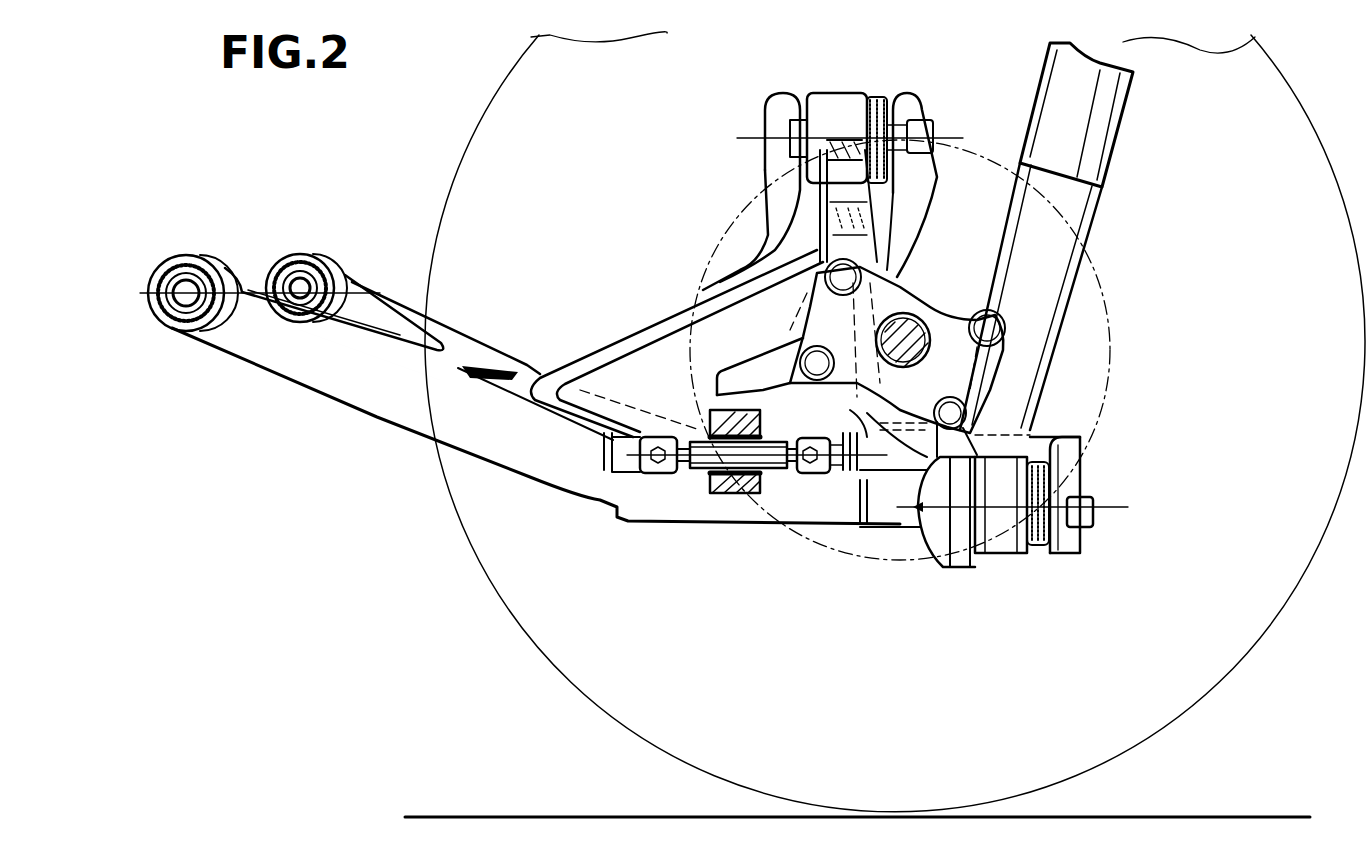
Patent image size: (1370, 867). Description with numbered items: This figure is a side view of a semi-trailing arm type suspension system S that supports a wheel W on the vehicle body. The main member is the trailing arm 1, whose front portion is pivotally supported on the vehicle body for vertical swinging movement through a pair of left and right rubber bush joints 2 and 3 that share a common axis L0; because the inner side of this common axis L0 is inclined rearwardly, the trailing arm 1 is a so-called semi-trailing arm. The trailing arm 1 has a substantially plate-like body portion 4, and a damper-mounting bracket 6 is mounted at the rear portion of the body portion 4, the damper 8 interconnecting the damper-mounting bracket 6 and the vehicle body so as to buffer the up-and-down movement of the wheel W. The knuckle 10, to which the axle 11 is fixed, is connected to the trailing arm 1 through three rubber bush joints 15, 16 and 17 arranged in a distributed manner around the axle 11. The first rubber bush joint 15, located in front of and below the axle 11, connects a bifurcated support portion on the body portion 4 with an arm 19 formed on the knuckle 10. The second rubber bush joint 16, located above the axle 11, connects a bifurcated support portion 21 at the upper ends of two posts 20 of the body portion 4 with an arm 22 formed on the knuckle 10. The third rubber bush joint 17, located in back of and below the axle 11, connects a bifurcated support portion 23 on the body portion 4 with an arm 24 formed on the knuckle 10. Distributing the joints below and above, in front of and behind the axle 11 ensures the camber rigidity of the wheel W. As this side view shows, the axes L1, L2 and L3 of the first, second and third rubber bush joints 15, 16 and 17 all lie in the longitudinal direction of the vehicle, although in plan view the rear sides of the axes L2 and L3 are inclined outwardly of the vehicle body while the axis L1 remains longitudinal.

The trailing arm 1 is at (374, 424).
The rubber bush joint 2 is at (299, 266).
The rubber bush joint 3 is at (174, 270).
The body portion 4 is at (519, 455).
The damper-mounting bracket 6 is at (920, 520).
The damper 8 is at (1112, 120).
The knuckle 10 is at (934, 292).
The axle 11 is at (920, 352).
The first rubber bush joint 15 is at (728, 495).
The second rubber bush joint 16 is at (847, 103).
The third rubber bush joint 17 is at (1010, 553).
The arm 19 is at (775, 365).
The posts 20 is at (617, 332).
The support portion 21 is at (925, 182).
The arm 22 is at (790, 182).
The support portion 23 is at (1078, 478).
The arm 24 is at (995, 427).
The common axis L0 is at (258, 289).
The axis of first rubber bush joint L1 is at (700, 432).
The axis of second rubber bush joint L2 is at (740, 134).
The axis of third rubber bush joint L3 is at (1112, 512).
The suspension system S is at (648, 262).
The wheel W is at (572, 690).